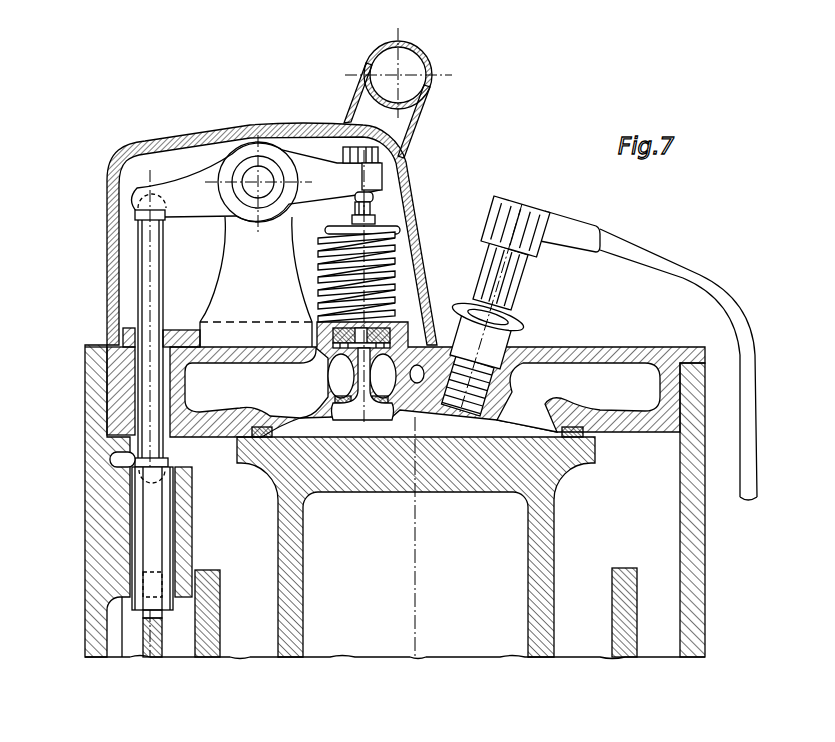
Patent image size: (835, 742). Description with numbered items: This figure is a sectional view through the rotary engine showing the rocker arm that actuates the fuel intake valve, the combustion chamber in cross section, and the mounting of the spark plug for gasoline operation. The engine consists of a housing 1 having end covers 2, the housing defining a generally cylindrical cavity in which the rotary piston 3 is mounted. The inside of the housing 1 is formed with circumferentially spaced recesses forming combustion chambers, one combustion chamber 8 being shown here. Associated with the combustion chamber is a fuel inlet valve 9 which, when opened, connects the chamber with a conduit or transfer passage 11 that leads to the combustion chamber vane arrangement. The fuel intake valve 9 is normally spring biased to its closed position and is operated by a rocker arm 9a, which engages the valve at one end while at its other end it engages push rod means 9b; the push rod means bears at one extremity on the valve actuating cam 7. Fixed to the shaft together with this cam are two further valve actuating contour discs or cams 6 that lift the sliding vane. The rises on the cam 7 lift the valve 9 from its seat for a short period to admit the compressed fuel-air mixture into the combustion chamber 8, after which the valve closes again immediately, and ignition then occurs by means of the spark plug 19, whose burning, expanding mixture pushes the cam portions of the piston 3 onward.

The housing 1 is at (620, 357).
The end covers 2 is at (104, 489).
The rotary piston 3 is at (560, 478).
The valve actuating contour discs 6 is at (195, 640).
The valve actuating cam 7 is at (143, 620).
The combustion chamber 8 is at (495, 427).
The fuel inlet valve 9 is at (402, 318).
The rocker arm 9a is at (157, 537).
The push rod means 9b is at (148, 300).
The transfer passage 11 is at (372, 107).
The spark plug 19 is at (492, 295).